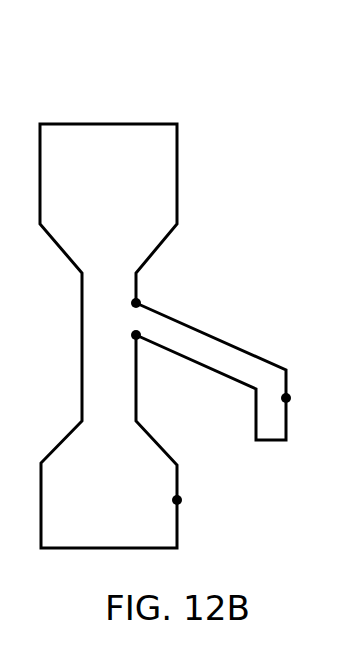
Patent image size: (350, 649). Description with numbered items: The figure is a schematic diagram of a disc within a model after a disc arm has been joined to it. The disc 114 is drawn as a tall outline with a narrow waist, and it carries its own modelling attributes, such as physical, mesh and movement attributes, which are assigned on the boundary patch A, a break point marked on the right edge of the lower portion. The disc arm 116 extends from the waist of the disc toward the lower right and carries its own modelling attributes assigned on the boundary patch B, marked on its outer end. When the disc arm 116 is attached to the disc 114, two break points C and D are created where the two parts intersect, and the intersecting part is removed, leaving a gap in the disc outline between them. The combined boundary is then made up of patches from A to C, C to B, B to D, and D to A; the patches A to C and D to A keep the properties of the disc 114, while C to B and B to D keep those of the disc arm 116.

The disc 114 is at (193, 105).
The disc arm 116 is at (263, 340).
The boundary patch A is at (188, 502).
The boundary patch B is at (297, 402).
The break point C is at (146, 358).
The break point D is at (147, 288).